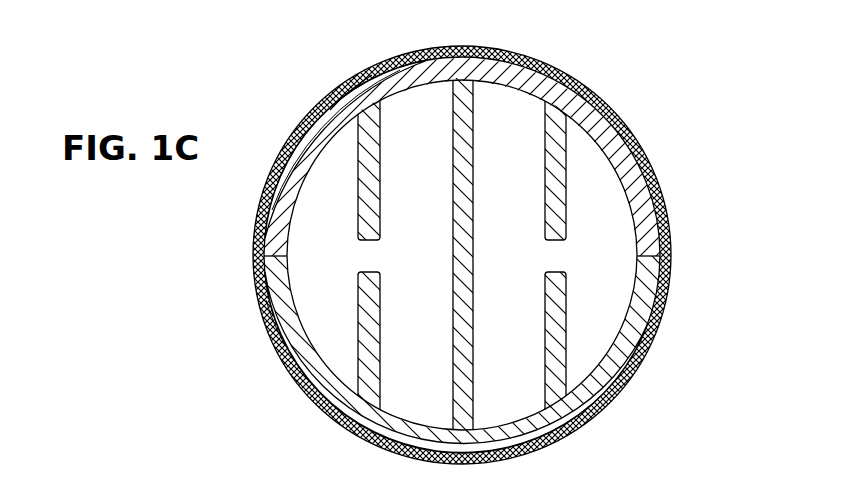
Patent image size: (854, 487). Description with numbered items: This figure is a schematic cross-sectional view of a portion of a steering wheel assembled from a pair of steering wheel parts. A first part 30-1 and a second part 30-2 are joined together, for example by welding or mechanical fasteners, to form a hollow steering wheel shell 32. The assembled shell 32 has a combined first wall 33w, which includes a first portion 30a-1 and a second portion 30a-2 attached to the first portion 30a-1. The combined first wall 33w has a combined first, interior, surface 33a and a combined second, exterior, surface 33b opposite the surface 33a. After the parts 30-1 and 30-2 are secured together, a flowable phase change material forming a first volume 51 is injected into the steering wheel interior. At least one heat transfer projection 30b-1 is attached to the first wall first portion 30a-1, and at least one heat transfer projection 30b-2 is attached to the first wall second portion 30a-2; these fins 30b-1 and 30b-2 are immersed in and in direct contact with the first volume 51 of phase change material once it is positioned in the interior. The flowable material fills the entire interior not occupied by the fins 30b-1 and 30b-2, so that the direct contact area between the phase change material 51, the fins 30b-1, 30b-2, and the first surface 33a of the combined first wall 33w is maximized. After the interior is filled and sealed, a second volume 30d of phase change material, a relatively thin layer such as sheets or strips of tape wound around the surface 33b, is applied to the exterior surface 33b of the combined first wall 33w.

The combined first wall 33w is at (512, 78).
The combined second exterior surface 33b is at (351, 88).
The combined first interior surface 33a is at (258, 286).
The hollow steering wheel shell 32 is at (458, 236).
The first steering wheel part 30-1 is at (643, 327).
The second steering wheel part 30-2 is at (577, 101).
The first wall first portion 30a-1 is at (362, 403).
The first wall second portion 30a-2 is at (333, 128).
The first heat transfer projection 30b-1 is at (555, 312).
The second heat transfer projection 30b-2 is at (557, 173).
The second volume of phase change material 30d is at (266, 338).
The first volume of phase change material 51 is at (424, 332).